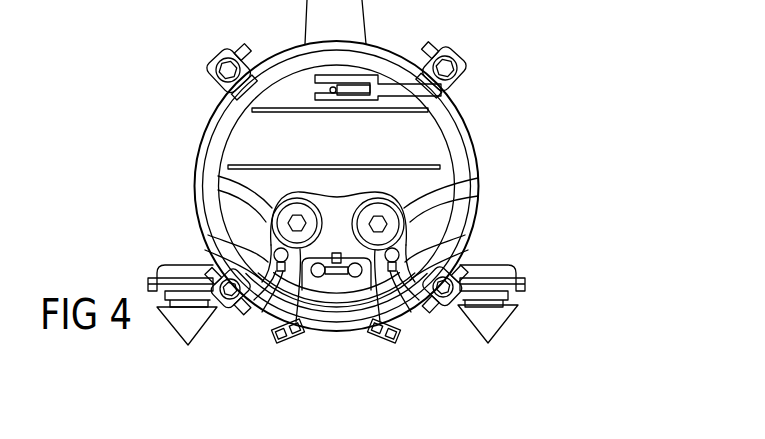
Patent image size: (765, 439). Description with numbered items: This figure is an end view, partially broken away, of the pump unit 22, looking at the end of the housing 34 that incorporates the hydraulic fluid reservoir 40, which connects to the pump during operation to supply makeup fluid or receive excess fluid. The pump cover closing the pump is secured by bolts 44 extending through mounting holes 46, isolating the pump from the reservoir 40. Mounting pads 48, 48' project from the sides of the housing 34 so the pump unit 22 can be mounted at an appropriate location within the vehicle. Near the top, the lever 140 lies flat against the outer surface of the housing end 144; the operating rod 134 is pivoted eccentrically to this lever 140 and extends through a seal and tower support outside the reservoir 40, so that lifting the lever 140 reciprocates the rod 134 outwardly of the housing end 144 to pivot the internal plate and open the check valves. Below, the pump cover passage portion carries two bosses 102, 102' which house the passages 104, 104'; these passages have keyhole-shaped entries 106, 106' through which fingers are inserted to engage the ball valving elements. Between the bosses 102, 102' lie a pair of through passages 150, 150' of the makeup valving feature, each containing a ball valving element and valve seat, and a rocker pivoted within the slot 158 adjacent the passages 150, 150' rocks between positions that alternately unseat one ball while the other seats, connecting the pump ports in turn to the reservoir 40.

The pump unit 22 is at (512, 151).
The housing 34 is at (205, 136).
The housing end 144 is at (430, 122).
The lever 140 is at (392, 86).
The operating rod 134 is at (332, 88).
The bolts 44 is at (268, 212).
The mounting holes 46 is at (270, 226).
The hydraulic fluid reservoir 40 is at (357, 247).
The passage 104 is at (476, 271).
The passage 104' is at (209, 265).
The through passage 150 is at (365, 327).
The through passage 150' is at (290, 328).
The slot 158 is at (337, 275).
The mounting pad 48 is at (531, 286).
The mounting pad 48' is at (146, 281).
The keyhole-shaped entry 106 is at (490, 341).
The keyhole-shaped entry 106' is at (211, 338).
The boss 102 is at (413, 343).
The boss 102' is at (249, 342).